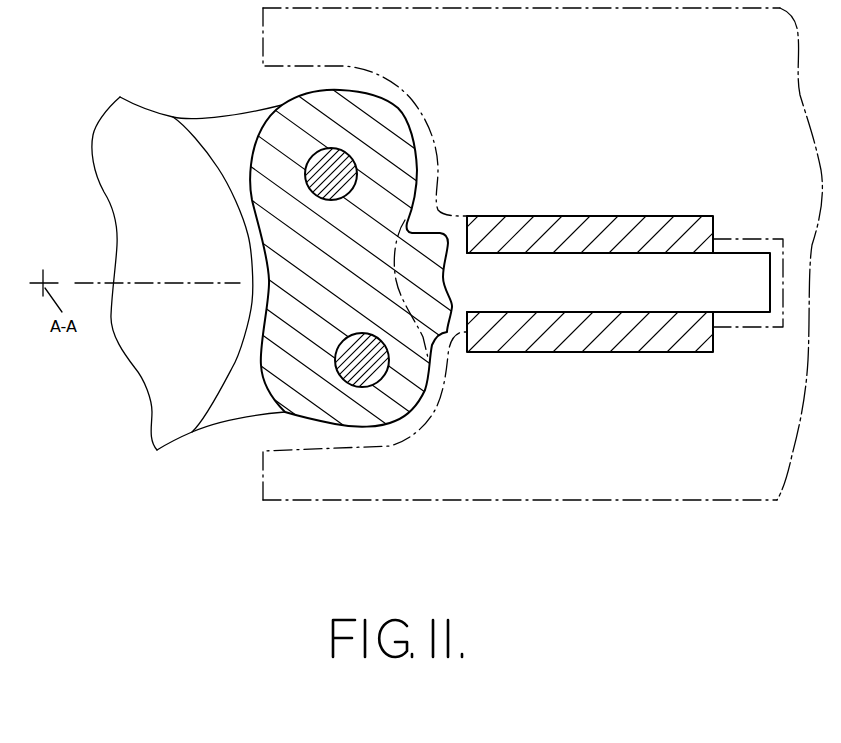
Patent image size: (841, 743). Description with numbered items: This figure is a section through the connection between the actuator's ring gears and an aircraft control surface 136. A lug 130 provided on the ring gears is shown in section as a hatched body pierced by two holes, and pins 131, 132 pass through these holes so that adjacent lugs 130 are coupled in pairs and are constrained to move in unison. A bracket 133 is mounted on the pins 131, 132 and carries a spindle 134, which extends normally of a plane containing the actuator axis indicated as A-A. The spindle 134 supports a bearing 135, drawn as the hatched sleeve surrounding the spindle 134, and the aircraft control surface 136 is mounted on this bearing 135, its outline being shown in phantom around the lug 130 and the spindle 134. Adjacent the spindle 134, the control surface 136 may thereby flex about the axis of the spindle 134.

The lug 130 is at (232, 135).
The pin 131 is at (332, 170).
The pin 132 is at (397, 396).
The bracket 133 is at (378, 213).
The spindle 134 is at (747, 293).
The bearing 135 is at (604, 236).
The aircraft control surface 136 is at (684, 474).